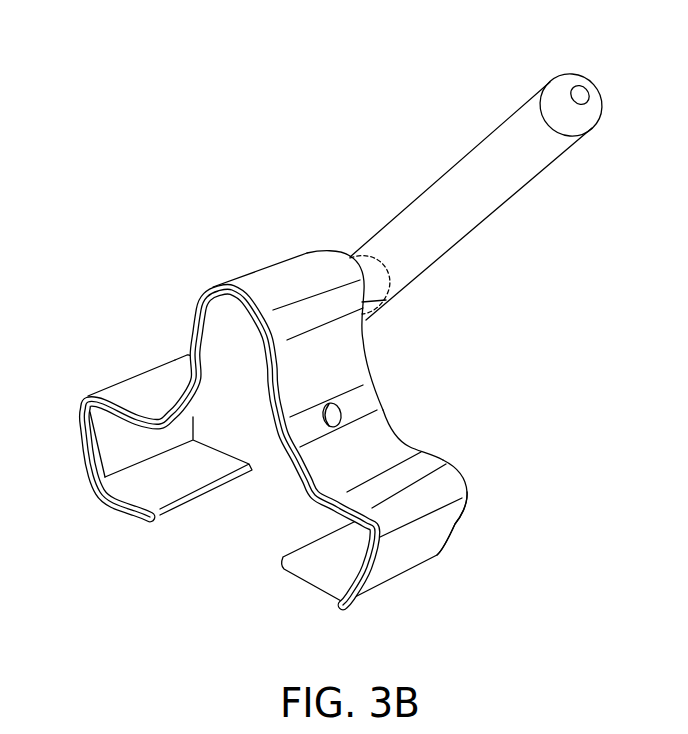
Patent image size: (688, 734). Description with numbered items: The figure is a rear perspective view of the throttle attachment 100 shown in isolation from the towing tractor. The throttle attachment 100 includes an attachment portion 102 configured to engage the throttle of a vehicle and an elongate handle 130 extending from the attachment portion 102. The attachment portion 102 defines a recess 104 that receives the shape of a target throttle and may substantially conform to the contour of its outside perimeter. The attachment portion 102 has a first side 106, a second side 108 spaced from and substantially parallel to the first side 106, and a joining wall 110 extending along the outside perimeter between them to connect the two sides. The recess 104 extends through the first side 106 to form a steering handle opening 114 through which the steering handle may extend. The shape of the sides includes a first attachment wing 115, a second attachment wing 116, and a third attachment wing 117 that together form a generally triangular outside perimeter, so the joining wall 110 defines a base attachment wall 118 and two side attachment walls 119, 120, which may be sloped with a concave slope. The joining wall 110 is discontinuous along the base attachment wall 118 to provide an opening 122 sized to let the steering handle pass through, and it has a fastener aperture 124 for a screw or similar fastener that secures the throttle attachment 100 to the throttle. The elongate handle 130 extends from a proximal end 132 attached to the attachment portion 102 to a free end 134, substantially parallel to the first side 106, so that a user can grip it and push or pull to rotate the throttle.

The throttle attachment 100 is at (319, 348).
The attachment portion 102 is at (281, 445).
The recess 104 is at (144, 497).
The first side 106 is at (433, 513).
The second side 108 is at (87, 478).
The joining wall 110 is at (366, 336).
The steering handle opening 114 is at (249, 458).
The first attachment wing 115 is at (83, 401).
The second attachment wing 116 is at (266, 275).
The third attachment wing 117 is at (455, 522).
The base attachment wall 118 is at (309, 585).
The side attachment wall 119 is at (198, 341).
The side attachment wall 120 is at (393, 433).
The opening 122 is at (206, 623).
The fastener aperture 124 is at (344, 417).
The elongate handle 130 is at (467, 179).
The proximal end 132 is at (352, 268).
The free end 134 is at (586, 86).